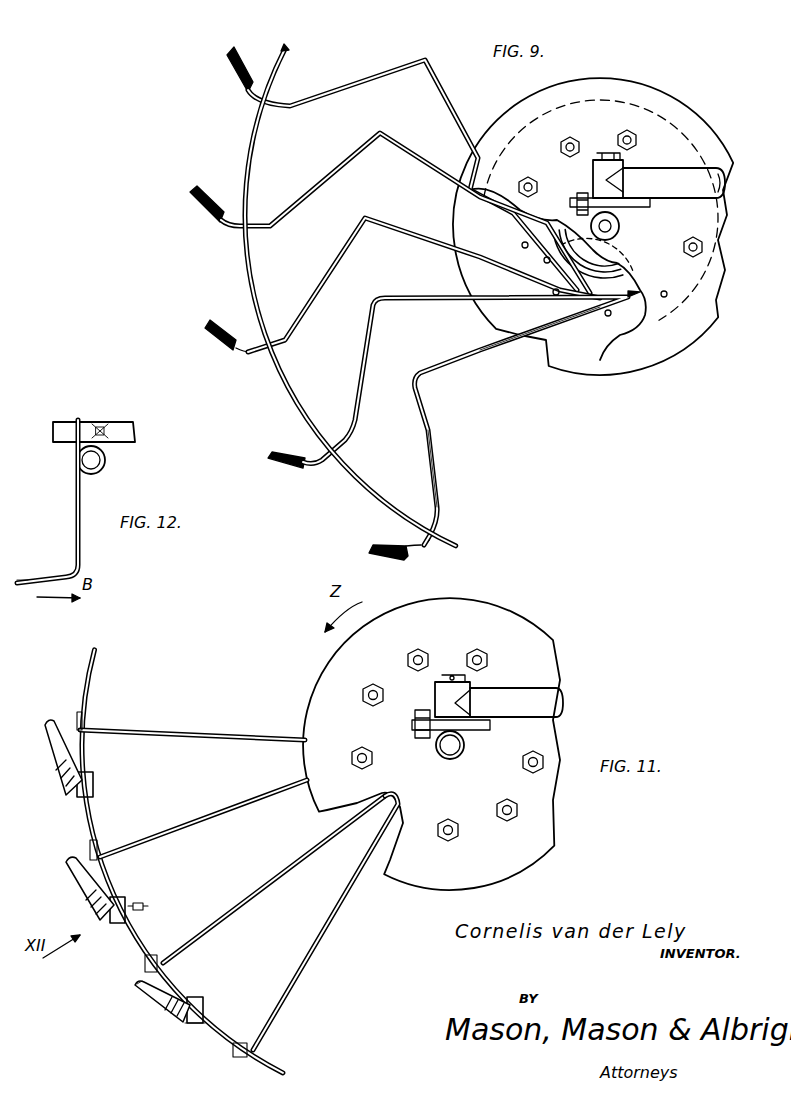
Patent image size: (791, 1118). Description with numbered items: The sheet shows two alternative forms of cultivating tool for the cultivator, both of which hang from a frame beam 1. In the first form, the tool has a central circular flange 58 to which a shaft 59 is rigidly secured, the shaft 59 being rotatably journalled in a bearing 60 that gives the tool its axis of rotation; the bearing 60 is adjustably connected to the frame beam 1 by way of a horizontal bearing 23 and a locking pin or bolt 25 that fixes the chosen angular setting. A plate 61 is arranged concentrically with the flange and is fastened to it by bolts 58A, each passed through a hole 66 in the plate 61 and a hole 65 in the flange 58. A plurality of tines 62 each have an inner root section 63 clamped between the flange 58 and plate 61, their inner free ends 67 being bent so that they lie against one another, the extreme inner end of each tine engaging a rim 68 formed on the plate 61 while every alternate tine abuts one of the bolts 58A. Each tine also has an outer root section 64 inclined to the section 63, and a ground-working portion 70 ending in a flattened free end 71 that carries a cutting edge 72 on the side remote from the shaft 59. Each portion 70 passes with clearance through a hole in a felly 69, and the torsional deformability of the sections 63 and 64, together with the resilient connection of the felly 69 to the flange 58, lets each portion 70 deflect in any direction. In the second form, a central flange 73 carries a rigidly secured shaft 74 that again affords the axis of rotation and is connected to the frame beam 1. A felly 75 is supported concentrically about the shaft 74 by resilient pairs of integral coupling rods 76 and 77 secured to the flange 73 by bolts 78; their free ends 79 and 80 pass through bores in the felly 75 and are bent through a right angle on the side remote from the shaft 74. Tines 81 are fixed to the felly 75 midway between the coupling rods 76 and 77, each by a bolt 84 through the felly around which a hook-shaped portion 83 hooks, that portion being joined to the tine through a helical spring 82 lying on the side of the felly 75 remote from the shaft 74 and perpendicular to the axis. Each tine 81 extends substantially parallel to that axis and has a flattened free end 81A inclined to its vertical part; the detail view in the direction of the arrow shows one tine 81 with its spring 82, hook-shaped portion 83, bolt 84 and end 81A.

In FIG. 9, the frame beam 1 is at (660, 181).
In FIG. 11, the frame beam 1 is at (497, 697).
In FIG. 9, the horizontal bearing 23 is at (593, 167).
In FIG. 11, the horizontal bearing 23 is at (438, 680).
In FIG. 9, the locking pin or bolt 25 is at (575, 195).
In FIG. 11, the locking pin or bolt 25 is at (418, 712).
In FIG. 9, the central circular flange 58 is at (650, 97).
In FIG. 9, the bolts 58A is at (695, 240).
In FIG. 9, the shaft 59 is at (620, 226).
In FIG. 9, the bearing 60 is at (617, 236).
In FIG. 9, the plate 61 is at (503, 270).
In FIG. 9, the tines 62 is at (528, 336).
In FIG. 9, the inner root section 63 is at (467, 354).
In FIG. 9, the outer root section 64 is at (428, 433).
In FIG. 9, the hole 65 is at (668, 294).
In FIG. 9, the hole 66 is at (551, 293).
In FIG. 9, the inner free ends 67 is at (613, 310).
In FIG. 9, the rim 68 is at (627, 270).
In FIG. 9, the felly 69 is at (352, 473).
In FIG. 9, the ground-working portion 70 is at (258, 356).
In FIG. 9, the flattened free end 71 is at (242, 58).
In FIG. 9, the cutting edge 72 is at (202, 205).
In FIG. 11, the central flange 73 is at (328, 670).
In FIG. 11, the shaft 74 is at (456, 750).
In FIG. 11, the felly 75 is at (270, 1058).
In FIG. 11, the coupling rod 76 is at (327, 944).
In FIG. 11, the coupling rod 77 is at (267, 893).
In FIG. 11, the bolts 78 is at (370, 757).
In FIG. 11, the free end 79 is at (243, 1053).
In FIG. 11, the free end 80 is at (145, 962).
In FIG. 12, the tines 81 is at (72, 526).
In FIG. 11, the tines 81 is at (178, 1030).
In FIG. 12, the flattened free end 81A is at (25, 580).
In FIG. 11, the flattened free end 81A is at (137, 993).
In FIG. 12, the helical spring 82 is at (106, 460).
In FIG. 11, the helical spring 82 is at (193, 1037).
In FIG. 12, the hook-shaped portion 83 is at (90, 430).
In FIG. 11, the hook-shaped portion 83 is at (93, 784).
In FIG. 12, the bolt 84 is at (103, 430).
In FIG. 11, the bolt 84 is at (139, 902).